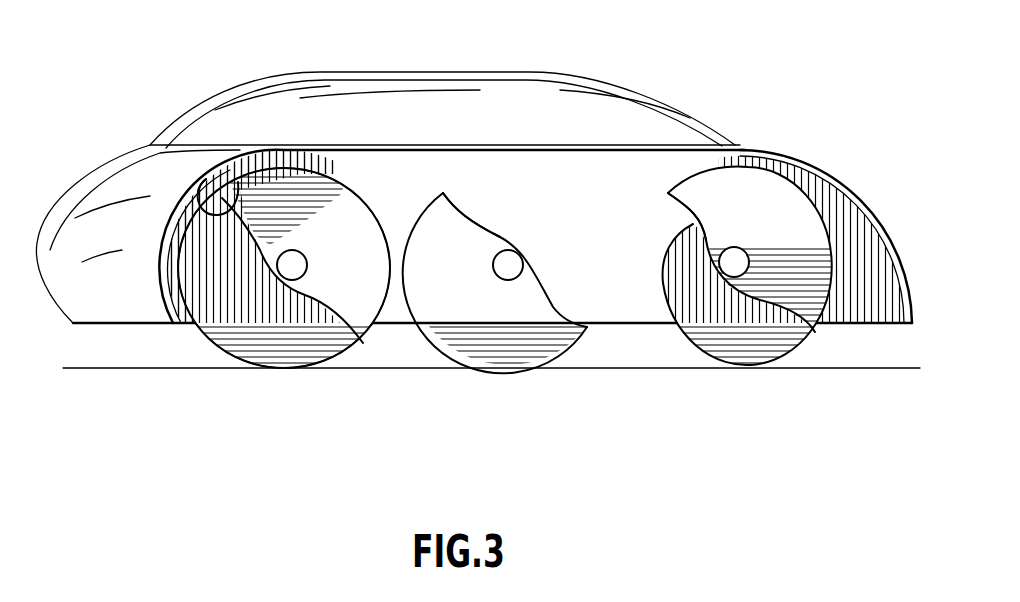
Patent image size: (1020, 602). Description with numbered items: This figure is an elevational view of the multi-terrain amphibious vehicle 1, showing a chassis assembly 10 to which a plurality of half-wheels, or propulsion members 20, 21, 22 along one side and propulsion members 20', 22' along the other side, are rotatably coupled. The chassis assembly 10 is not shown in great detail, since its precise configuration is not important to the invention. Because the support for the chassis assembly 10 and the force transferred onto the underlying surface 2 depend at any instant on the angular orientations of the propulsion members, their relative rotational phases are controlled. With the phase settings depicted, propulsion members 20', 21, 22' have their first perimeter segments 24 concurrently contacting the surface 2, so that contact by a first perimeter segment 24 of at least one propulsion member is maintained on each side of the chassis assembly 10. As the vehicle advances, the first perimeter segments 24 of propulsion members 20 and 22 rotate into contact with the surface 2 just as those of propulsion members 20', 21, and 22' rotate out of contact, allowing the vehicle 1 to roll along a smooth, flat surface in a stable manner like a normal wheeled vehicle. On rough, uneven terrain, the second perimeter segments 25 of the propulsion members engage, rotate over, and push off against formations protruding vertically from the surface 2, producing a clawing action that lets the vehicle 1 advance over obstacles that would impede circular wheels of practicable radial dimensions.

The multi-terrain amphibious vehicle 1 is at (477, 176).
The underlying surface 2 is at (573, 407).
The chassis assembly 10 is at (123, 190).
The propulsion member 20 is at (282, 279).
The propulsion member 20' is at (285, 394).
The propulsion member 21 is at (480, 313).
The propulsion member 22 is at (750, 265).
The propulsion member 22' is at (750, 388).
The first perimeter segment 24 is at (373, 212).
The second perimeter segment 25 is at (197, 185).